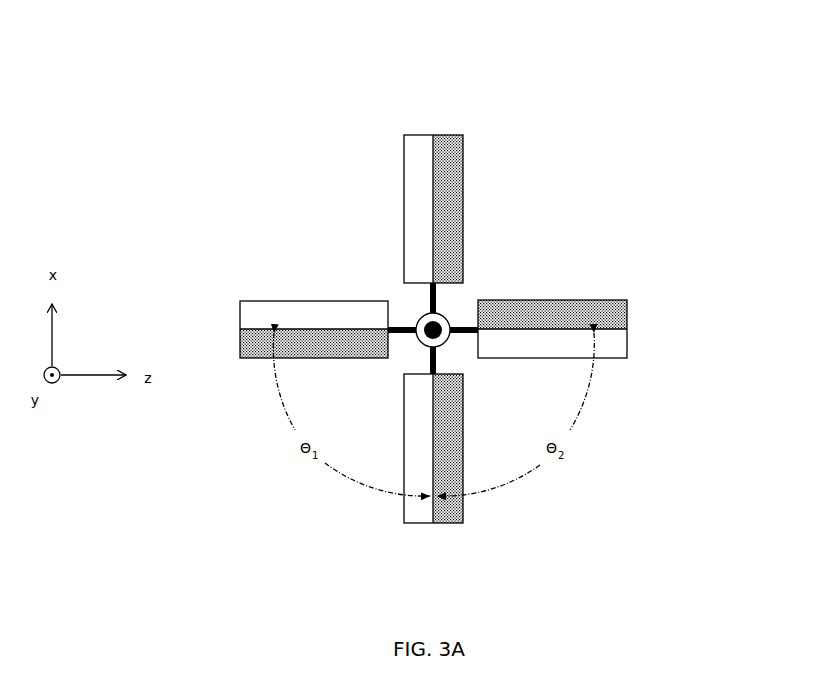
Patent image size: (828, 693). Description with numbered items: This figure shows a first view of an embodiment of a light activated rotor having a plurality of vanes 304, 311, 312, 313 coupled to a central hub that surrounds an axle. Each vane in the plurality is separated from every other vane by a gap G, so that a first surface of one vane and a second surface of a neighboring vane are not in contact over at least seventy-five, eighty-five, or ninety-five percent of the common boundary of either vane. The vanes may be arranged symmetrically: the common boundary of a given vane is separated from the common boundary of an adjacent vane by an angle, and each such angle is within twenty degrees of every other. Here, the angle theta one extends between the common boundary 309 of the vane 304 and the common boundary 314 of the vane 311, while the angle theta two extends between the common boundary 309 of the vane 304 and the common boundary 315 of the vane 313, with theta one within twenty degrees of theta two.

The vane 304 is at (433, 536).
The common boundary 309 is at (433, 399).
The vane 311 is at (220, 331).
The vane 312 is at (433, 120).
The vane 313 is at (646, 331).
The common boundary 314 is at (340, 329).
The common boundary 315 is at (559, 329).
The gap G is at (532, 228).